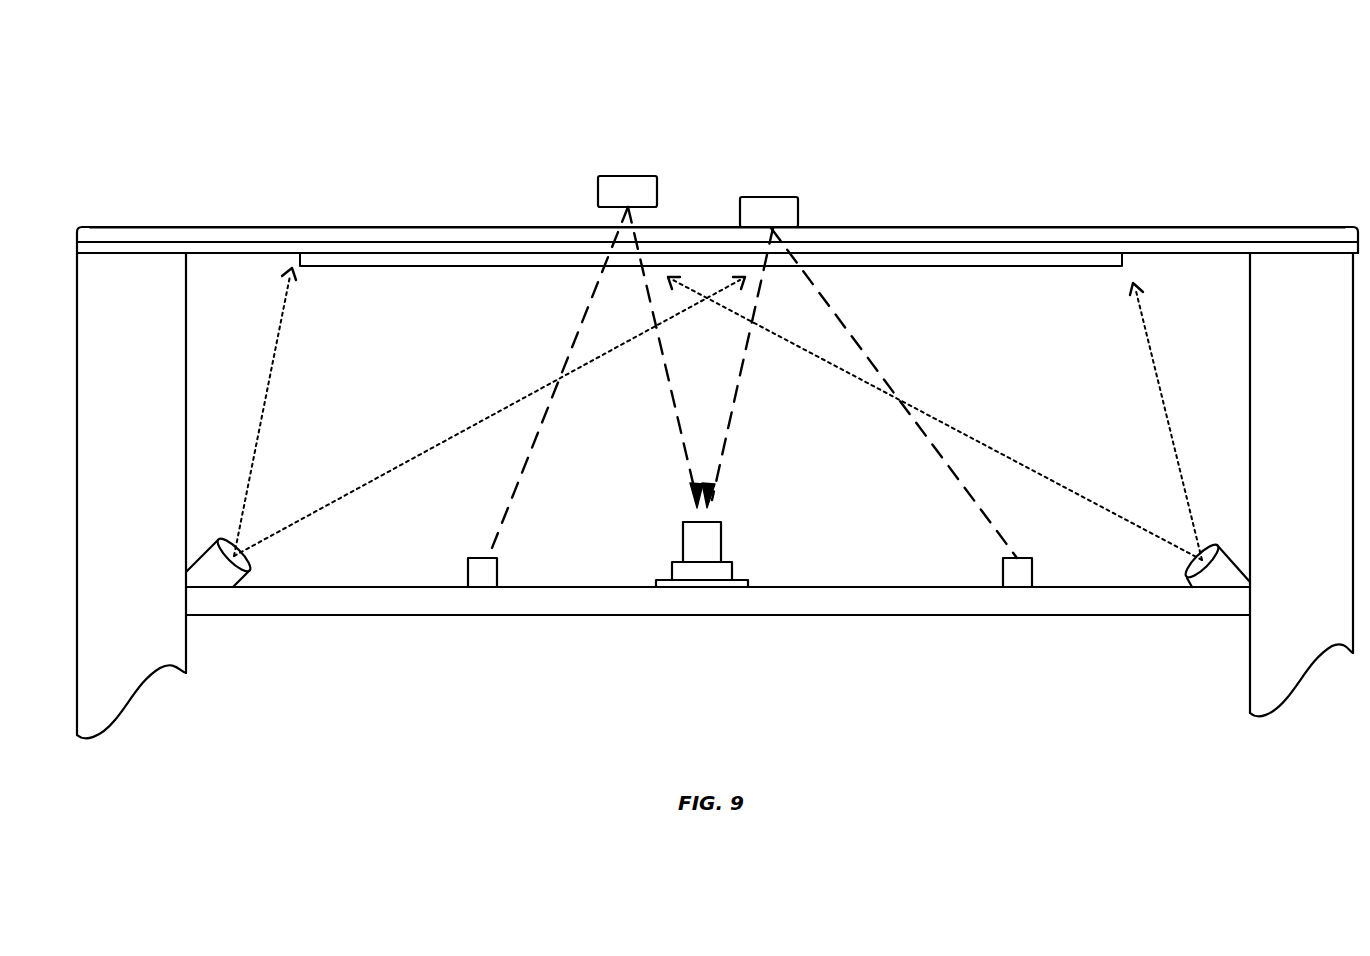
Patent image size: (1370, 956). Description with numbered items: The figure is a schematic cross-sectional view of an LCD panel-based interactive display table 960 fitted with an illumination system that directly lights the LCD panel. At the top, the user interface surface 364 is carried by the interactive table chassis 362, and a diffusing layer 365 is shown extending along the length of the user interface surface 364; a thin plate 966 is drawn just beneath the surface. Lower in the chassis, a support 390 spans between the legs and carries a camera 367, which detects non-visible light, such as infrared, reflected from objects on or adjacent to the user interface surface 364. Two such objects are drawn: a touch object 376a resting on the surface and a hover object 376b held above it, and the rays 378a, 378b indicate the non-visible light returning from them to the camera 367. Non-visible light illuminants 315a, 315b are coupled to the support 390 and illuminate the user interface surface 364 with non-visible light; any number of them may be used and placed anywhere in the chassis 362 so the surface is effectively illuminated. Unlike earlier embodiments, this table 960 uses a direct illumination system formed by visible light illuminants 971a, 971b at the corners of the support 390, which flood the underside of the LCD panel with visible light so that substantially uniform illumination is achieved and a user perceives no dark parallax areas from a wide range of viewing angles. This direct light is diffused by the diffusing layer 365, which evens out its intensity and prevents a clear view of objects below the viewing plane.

The interactive display table 960 is at (288, 123).
The user interface surface 364 is at (1130, 228).
The diffusing layer 365 is at (377, 247).
The window plate 966 is at (405, 268).
The interactive table chassis 362 is at (186, 633).
The support 390 is at (800, 615).
The touch object 376a is at (756, 197).
The hover object 376b is at (615, 176).
The ray 378a is at (538, 393).
The ray 378b is at (878, 372).
The non-visible light illuminant 315a is at (468, 568).
The non-visible light illuminant 315b is at (1003, 568).
The camera 367 is at (723, 532).
The visible light illuminant 971a is at (252, 570).
The visible light illuminant 971b is at (1188, 572).